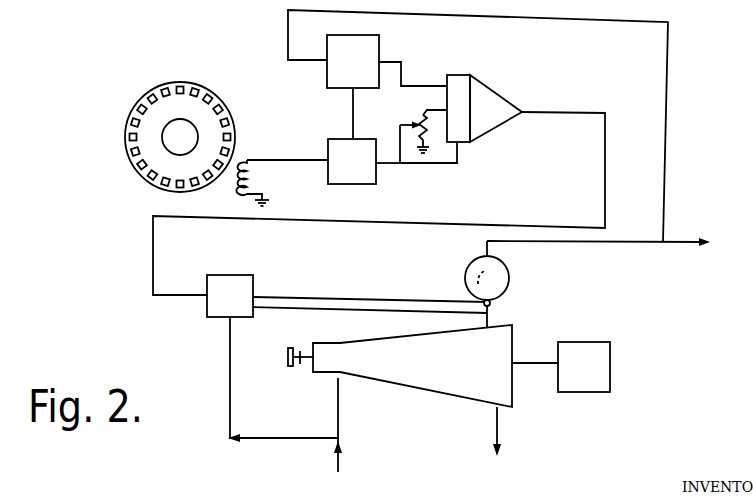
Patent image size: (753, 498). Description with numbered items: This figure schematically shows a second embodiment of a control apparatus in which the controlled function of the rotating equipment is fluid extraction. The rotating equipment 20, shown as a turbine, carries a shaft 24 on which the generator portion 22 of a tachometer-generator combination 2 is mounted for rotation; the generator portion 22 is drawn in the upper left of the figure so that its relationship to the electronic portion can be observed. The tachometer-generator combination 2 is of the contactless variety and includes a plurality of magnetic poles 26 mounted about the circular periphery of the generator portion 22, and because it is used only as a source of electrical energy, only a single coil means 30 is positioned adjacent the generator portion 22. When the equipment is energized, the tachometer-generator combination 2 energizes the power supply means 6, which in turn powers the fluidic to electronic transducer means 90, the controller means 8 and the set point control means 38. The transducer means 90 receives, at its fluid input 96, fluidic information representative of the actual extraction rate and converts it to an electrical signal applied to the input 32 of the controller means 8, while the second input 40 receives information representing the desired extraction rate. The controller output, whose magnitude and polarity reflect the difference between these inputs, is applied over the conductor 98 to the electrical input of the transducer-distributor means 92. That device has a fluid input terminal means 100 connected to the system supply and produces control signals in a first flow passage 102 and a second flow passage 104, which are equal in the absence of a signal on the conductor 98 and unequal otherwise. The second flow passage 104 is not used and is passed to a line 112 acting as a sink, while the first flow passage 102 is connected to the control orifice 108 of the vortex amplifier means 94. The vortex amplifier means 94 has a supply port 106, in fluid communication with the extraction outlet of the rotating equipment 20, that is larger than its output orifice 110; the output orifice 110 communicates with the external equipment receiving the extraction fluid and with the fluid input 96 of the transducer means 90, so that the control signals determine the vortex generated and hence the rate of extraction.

The tachometer-generator combination 2 is at (116, 134).
The magnetic poles 26 is at (196, 85).
The generator portion 22 is at (167, 152).
The coil means 30 is at (302, 160).
The power supply means 6 is at (350, 185).
The fluidic to electronic transducer means 90 is at (381, 48).
The fluid input 96 is at (308, 61).
The input 32 is at (416, 85).
The controller means 8 is at (490, 86).
The second input 40 is at (437, 108).
The set point control means 38 is at (428, 133).
The conductor 98 is at (605, 163).
The transducer-distributor means 92 is at (233, 275).
The first flow passage 102 is at (279, 297).
The second flow passage 104 is at (268, 308).
The control orifice 108 is at (436, 300).
The output orifice 110 is at (485, 244).
The vortex amplifier means 94 is at (503, 264).
The supply port 106 is at (491, 303).
The line 112 is at (488, 315).
The fluid input terminal means 100 is at (230, 379).
The shaft 24 is at (300, 369).
The rotating equipment 20 is at (412, 390).